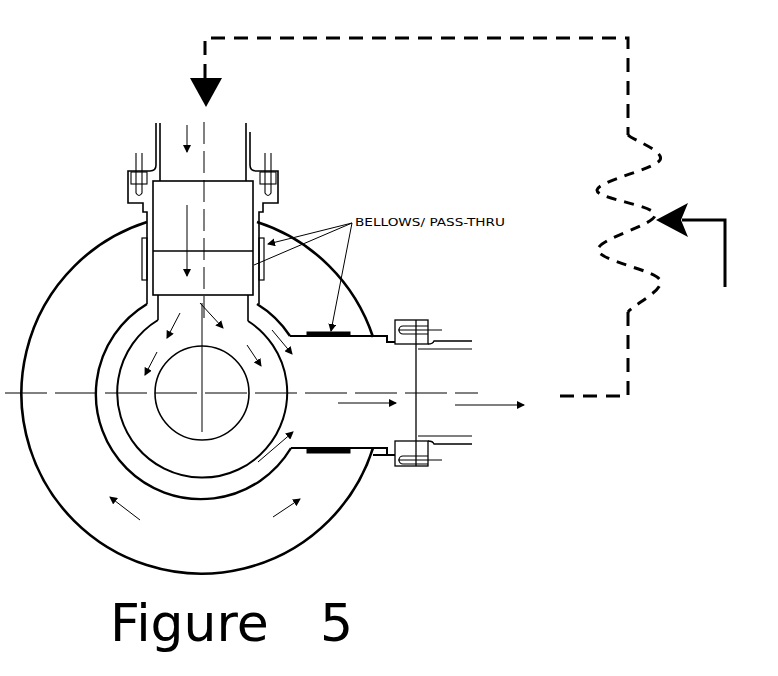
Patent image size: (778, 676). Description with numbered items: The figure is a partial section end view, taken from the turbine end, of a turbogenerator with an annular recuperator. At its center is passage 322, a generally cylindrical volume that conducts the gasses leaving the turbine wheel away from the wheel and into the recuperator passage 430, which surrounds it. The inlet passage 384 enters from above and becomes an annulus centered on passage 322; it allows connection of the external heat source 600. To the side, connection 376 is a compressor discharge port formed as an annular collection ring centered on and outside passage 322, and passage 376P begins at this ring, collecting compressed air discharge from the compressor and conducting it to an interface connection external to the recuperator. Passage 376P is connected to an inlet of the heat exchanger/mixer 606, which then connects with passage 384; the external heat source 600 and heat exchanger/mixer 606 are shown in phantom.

The inlet passage 384 is at (220, 160).
The passage 322 is at (202, 371).
The compressor discharge port 376 is at (216, 496).
The passage 376P is at (481, 389).
The recuperator passage 430 is at (86, 459).
The heat exchanger/mixer 606 is at (449, 217).
The external heat source 600 is at (698, 255).